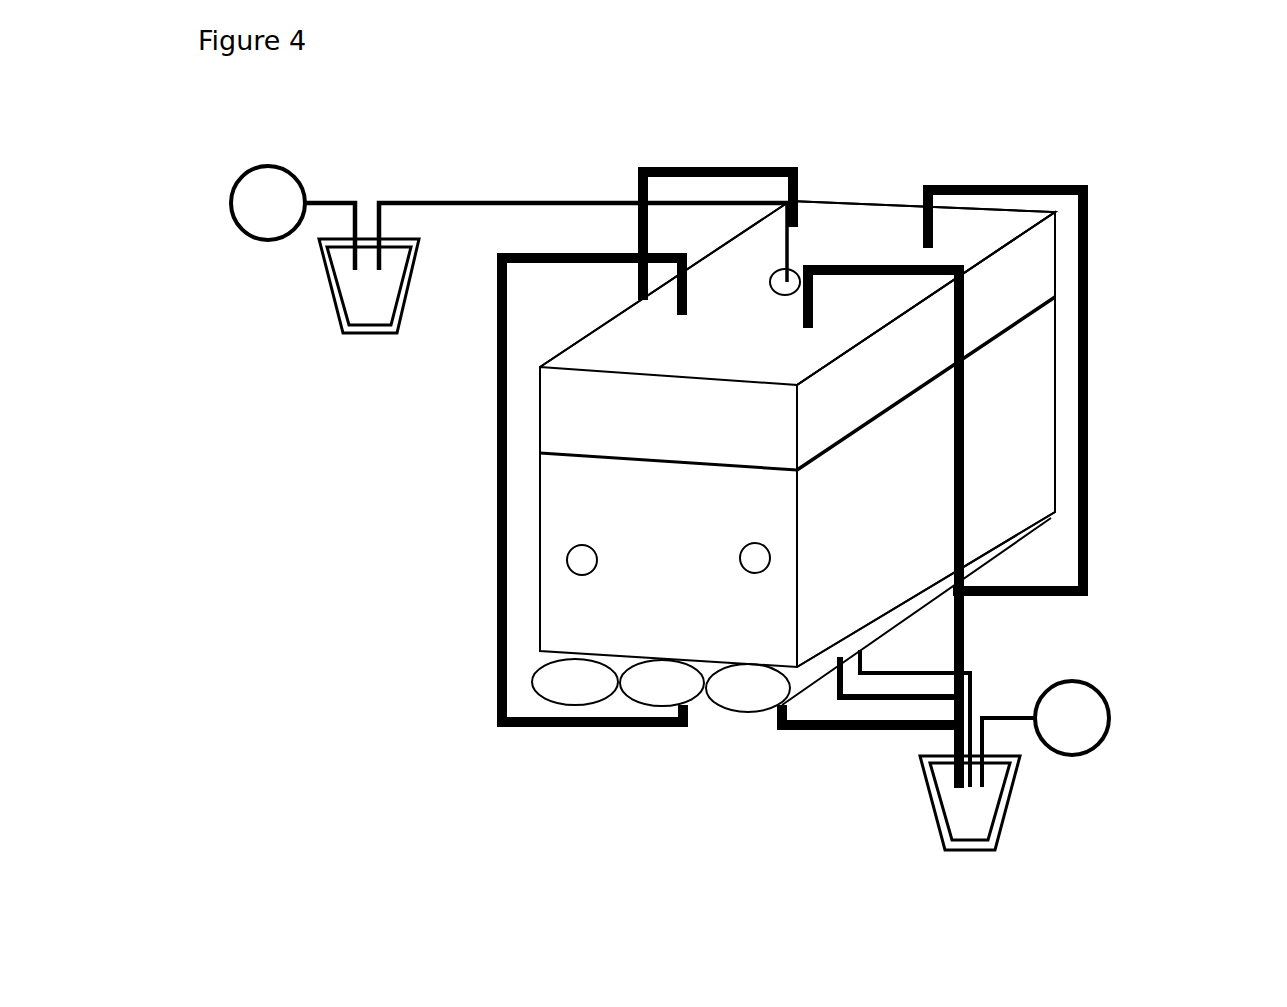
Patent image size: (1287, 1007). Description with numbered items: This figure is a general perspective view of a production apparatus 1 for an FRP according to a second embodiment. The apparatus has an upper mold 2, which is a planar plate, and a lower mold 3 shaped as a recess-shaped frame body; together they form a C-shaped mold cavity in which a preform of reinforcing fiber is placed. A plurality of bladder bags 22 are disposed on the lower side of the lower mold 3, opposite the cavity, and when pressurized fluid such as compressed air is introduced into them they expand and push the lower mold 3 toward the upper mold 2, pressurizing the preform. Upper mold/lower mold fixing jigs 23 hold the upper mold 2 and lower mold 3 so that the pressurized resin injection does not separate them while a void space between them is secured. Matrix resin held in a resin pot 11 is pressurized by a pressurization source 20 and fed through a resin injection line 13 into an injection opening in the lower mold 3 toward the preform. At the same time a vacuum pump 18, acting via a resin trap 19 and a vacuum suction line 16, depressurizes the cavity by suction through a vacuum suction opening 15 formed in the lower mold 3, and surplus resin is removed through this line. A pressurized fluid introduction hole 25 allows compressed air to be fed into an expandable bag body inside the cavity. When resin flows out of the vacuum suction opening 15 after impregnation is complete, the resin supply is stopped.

The production apparatus 1 is at (1104, 290).
The upper mold 2 is at (897, 242).
The lower mold 3 is at (1053, 452).
The resin pot 11 is at (995, 787).
The resin injection line 13 is at (885, 688).
The vacuum suction opening 15 is at (790, 275).
The vacuum suction line 16 is at (482, 202).
The vacuum pump 18 is at (245, 235).
The resin trap 19 is at (355, 341).
The pressurization source 20 is at (1072, 767).
The bladder bags 22 is at (557, 693).
The upper mold/lower mold fixing jigs 23 is at (500, 573).
The pressurized fluid introduction hole 25 is at (762, 562).